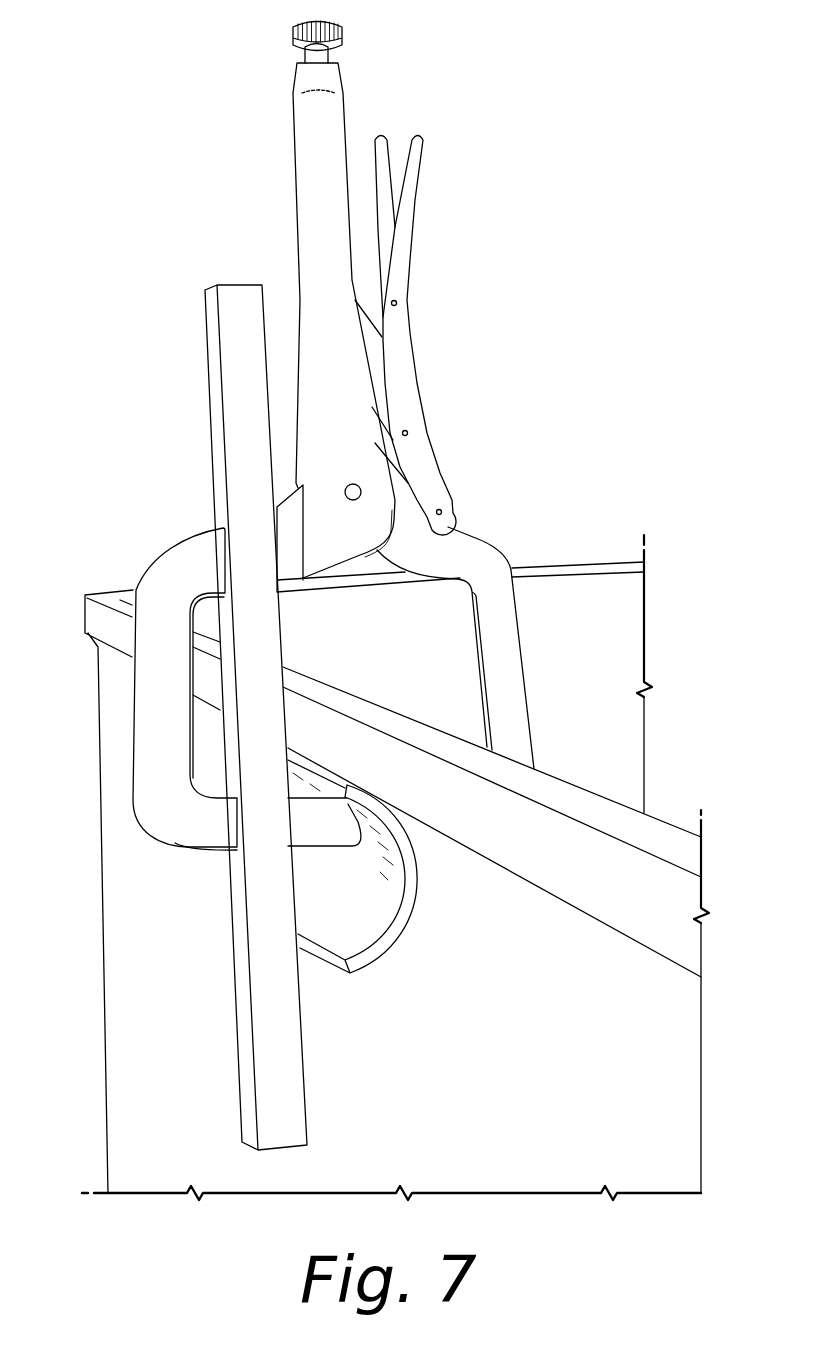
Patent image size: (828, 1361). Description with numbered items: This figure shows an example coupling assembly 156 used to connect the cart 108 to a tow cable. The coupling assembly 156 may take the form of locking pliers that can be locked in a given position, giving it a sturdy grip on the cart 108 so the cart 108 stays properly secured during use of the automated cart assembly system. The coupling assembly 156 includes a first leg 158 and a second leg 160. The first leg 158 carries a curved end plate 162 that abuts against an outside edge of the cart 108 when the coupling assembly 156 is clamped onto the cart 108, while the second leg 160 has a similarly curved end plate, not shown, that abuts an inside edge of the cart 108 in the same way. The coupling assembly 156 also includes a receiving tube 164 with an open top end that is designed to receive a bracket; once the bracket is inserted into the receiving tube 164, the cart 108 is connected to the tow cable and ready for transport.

The cart 108 is at (573, 866).
The coupling assembly 156 is at (478, 323).
The first leg 158 is at (160, 723).
The second leg 160 is at (472, 557).
The curved end plate 162 is at (413, 918).
The receiving tube 164 is at (245, 363).